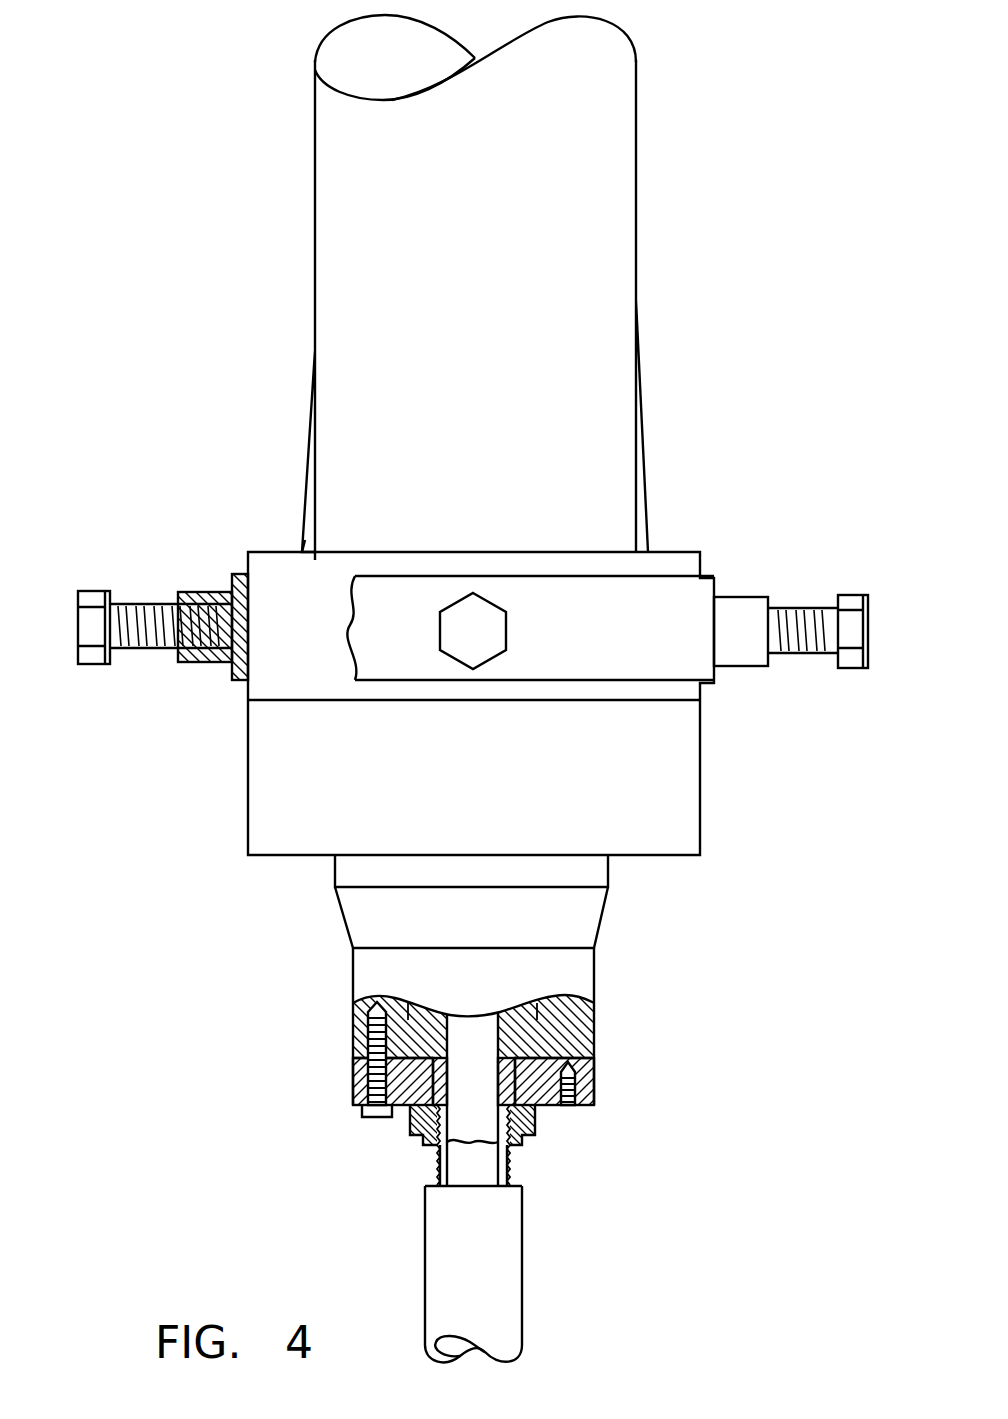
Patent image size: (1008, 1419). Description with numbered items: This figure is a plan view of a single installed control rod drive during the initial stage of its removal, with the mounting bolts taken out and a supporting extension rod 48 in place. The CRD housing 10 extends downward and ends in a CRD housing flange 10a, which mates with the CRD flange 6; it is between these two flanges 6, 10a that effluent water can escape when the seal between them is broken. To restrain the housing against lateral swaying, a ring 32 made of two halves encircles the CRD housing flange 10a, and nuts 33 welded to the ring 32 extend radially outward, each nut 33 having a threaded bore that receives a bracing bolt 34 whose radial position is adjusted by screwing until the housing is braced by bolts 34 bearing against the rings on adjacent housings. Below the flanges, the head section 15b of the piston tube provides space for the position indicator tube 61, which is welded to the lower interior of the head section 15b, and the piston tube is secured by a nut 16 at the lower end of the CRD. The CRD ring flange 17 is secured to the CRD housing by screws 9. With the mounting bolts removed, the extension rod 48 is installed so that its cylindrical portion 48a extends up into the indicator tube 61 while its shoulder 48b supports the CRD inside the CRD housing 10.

The CRD housing 10 is at (315, 262).
The CRD housing flange 10a is at (278, 552).
The CRD flange 6 is at (248, 803).
The ring 32 is at (657, 596).
The nut 33 is at (198, 602).
The bracing bolt 34 is at (93, 636).
The position indicator tube 61 is at (476, 1028).
The head section 15b is at (528, 1034).
The nut 16 is at (537, 1128).
The CRD ring flange 17 is at (585, 1081).
The screw 9 is at (372, 1118).
The extension rod 48 is at (523, 1245).
The cylindrical portion of extension rod 48a is at (472, 1170).
The shoulder of extension rod 48b is at (430, 1175).